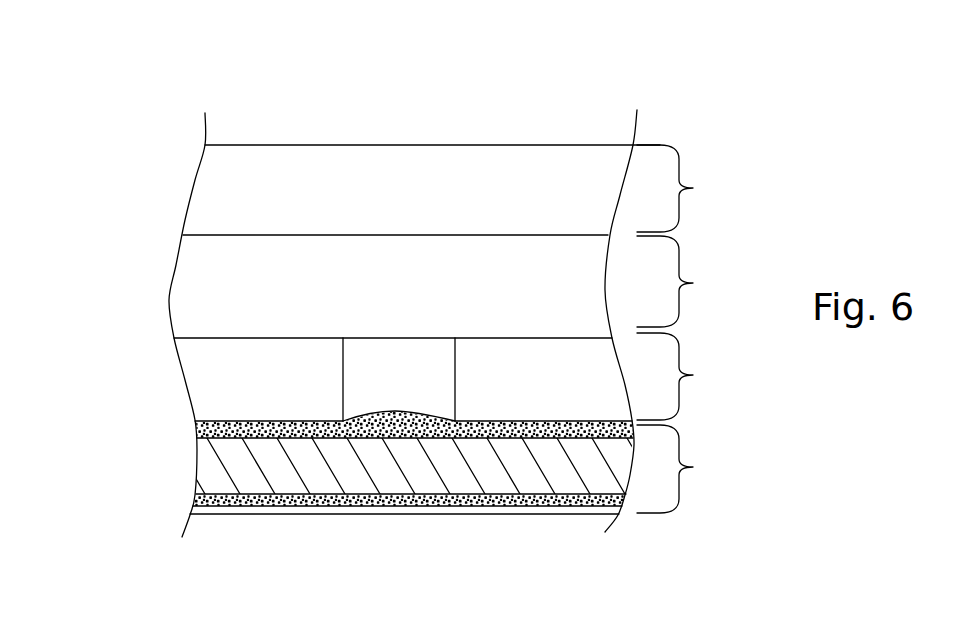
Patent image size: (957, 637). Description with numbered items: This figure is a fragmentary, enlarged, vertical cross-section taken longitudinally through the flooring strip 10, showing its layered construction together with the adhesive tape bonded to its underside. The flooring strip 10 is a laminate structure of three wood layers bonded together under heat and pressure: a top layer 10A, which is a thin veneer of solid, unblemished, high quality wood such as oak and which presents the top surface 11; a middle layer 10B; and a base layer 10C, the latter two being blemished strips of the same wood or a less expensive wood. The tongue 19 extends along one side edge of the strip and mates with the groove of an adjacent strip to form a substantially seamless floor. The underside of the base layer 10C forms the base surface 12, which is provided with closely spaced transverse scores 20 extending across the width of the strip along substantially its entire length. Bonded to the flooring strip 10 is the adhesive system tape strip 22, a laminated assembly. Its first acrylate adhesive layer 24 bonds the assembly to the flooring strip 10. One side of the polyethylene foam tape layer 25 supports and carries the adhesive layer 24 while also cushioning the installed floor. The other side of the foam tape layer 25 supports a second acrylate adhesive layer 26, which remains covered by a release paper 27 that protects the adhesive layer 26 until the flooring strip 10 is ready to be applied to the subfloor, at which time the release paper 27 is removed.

The flooring strip 10 is at (240, 93).
The top layer 10A is at (688, 188).
The middle layer 10B is at (688, 281).
The base layer 10C is at (688, 376).
The top surface 11 is at (340, 145).
The base surface 12 is at (480, 422).
The tongue 19 is at (312, 267).
The scores 20 is at (455, 393).
The adhesive system tape strip 22 is at (686, 469).
The first acrylate adhesive layer 24 is at (241, 430).
The polyethylene foam tape layer 25 is at (215, 475).
The second acrylate adhesive layer 26 is at (198, 500).
The release paper 27 is at (242, 517).